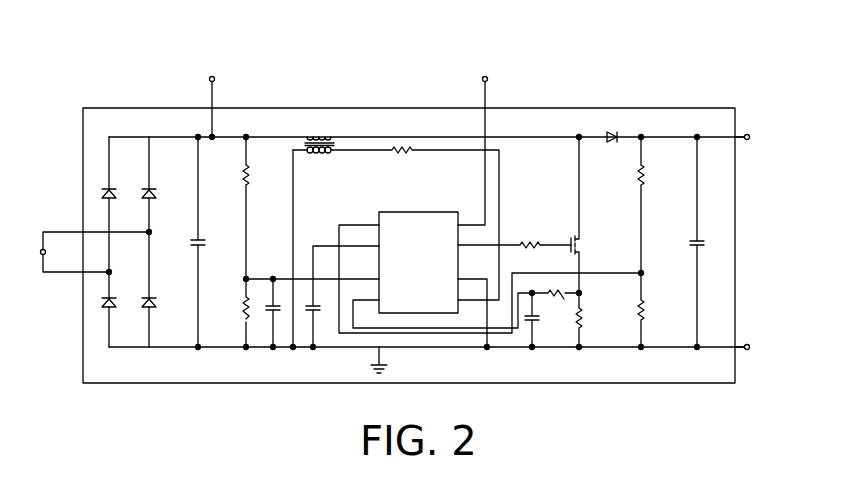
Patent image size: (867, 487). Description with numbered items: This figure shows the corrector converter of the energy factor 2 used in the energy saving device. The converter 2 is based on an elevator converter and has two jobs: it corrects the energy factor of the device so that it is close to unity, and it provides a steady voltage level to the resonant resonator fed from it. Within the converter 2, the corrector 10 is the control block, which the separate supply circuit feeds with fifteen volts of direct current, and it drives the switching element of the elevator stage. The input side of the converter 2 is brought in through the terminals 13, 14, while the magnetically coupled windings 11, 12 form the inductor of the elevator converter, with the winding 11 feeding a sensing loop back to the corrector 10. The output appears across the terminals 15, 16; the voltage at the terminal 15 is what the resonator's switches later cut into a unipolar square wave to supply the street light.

The corrector converter of the energy factor 2 is at (555, 80).
The corrector 10 is at (408, 212).
The secondary winding 11 is at (319, 164).
The primary winding / inductor 12 is at (319, 129).
The input terminal 13 is at (198, 107).
The input terminal 14 is at (471, 150).
The terminal 15 is at (750, 126).
The output terminal 16 is at (748, 336).